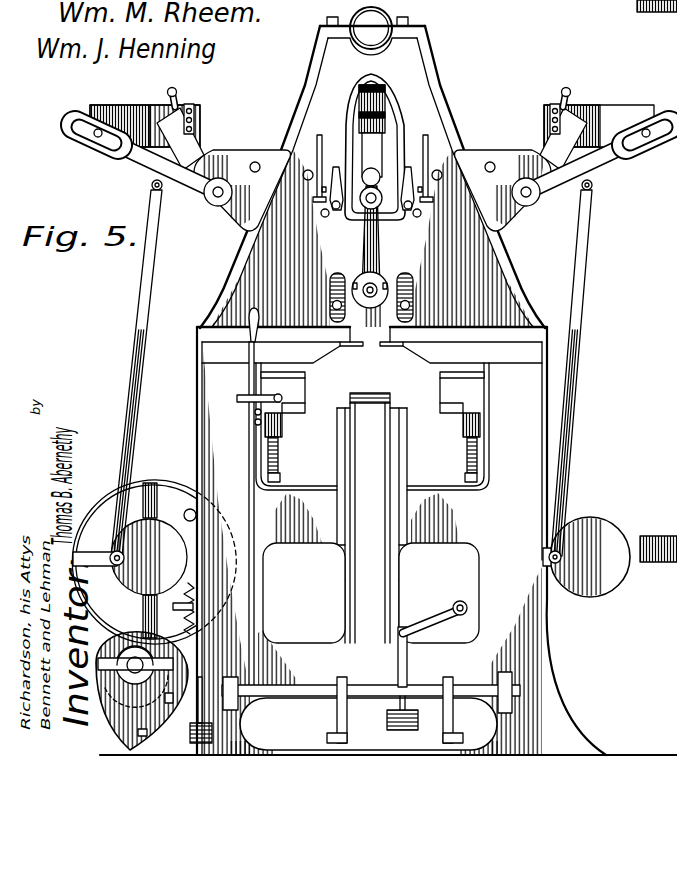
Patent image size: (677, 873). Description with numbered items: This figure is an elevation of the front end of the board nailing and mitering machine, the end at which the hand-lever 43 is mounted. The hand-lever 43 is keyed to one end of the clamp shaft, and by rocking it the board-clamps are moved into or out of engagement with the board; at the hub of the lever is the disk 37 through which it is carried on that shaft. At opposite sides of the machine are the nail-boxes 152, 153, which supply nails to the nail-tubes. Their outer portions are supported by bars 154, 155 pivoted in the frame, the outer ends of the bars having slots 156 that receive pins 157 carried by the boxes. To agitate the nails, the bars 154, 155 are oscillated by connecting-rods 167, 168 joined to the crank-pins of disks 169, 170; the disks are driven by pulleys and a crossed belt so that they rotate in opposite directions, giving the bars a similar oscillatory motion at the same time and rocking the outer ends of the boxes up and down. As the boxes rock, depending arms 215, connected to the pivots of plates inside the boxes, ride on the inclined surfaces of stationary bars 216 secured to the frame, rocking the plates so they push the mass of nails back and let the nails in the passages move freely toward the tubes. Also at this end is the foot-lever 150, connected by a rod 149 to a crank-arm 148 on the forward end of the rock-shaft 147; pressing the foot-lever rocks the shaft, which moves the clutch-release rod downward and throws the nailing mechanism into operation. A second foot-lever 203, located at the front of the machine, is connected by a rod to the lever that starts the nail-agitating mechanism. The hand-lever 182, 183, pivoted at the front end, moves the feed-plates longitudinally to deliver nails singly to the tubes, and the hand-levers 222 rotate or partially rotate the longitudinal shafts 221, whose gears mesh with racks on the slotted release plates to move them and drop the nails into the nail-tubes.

The crank disc 37 is at (384, 280).
The hand-lever 43 is at (368, 254).
The rock-shaft 147 is at (457, 602).
The crank-arm 148 is at (420, 620).
The rod 149 is at (407, 663).
The foot-lever 150 is at (410, 722).
The nail-box 152 is at (138, 112).
The nail-box 153 is at (598, 110).
The bar 154 is at (143, 166).
The bar 155 is at (598, 163).
The slot 156 is at (80, 112).
The pin 157 is at (100, 143).
The connecting-rod 167 is at (137, 343).
The connecting-rod 168 is at (567, 383).
The disk 169 is at (154, 562).
The disk 170 is at (588, 563).
The hand-lever 182 is at (318, 141).
The hand-lever 183 is at (428, 160).
The foot-lever 203 is at (212, 731).
The depending arm 215 is at (180, 100).
The bar 216 is at (183, 143).
The shaft 221 is at (327, 217).
The hand-lever 222 is at (340, 168).